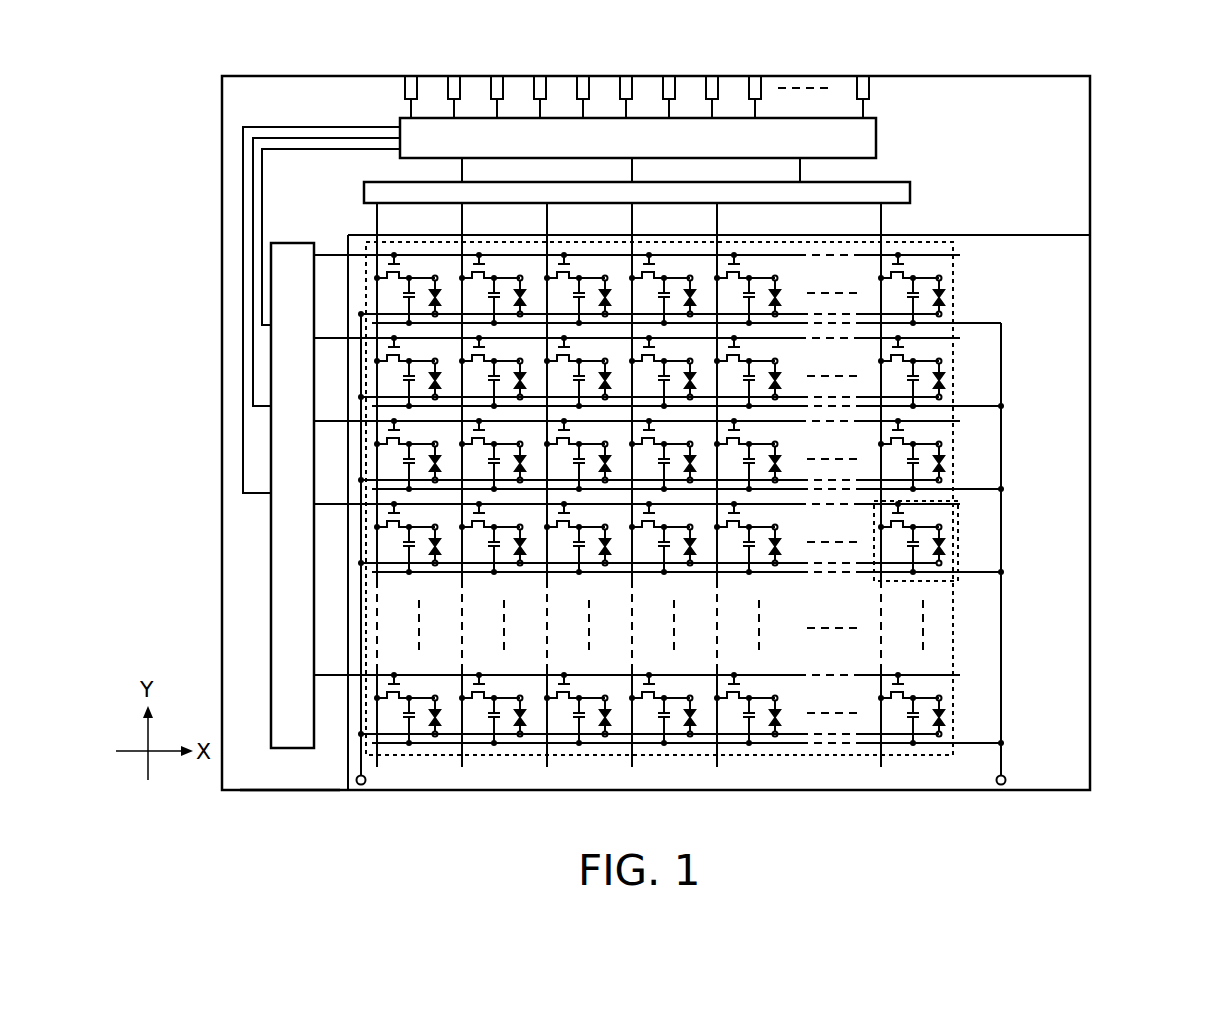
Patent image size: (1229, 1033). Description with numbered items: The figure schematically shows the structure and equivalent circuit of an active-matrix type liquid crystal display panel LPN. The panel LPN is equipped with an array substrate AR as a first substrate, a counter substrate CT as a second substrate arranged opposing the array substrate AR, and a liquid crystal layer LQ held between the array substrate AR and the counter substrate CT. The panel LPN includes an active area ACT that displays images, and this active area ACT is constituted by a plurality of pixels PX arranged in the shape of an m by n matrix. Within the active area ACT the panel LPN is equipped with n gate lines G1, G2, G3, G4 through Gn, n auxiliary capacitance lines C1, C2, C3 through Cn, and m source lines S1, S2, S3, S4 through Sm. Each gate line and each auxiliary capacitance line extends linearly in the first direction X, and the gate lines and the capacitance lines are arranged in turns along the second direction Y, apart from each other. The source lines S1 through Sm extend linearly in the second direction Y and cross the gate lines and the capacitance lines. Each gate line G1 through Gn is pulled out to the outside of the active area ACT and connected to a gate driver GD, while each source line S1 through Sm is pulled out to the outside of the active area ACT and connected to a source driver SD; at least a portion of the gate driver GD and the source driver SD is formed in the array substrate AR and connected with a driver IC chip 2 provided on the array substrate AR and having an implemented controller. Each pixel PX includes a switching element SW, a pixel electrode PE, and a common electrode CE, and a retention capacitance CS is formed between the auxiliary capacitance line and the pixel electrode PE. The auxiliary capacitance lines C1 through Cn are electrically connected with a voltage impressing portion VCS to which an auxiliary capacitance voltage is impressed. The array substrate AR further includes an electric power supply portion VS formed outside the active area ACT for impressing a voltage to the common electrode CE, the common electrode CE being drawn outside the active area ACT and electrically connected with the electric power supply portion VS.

The driver IC chip 2 is at (876, 118).
The liquid crystal display panel LPN is at (1122, 88).
The source driver SD is at (910, 190).
The gate driver GD is at (271, 610).
The counter substrate CT is at (1055, 235).
The active area ACT is at (953, 357).
The array substrate AR is at (288, 778).
The electric power supply portion VS is at (364, 785).
The voltage impressing portion VCS is at (1005, 777).
The source line S1 is at (380, 224).
The source line S2 is at (465, 224).
The source line S3 is at (550, 224).
The source line S4 is at (635, 224).
The source line Sm is at (884, 222).
The gate line G1 is at (327, 255).
The gate line G2 is at (327, 338).
The gate line G3 is at (327, 421).
The gate line G4 is at (327, 504).
The gate line Gn is at (329, 675).
The auxiliary capacitance line C1 is at (974, 322).
The auxiliary capacitance line C2 is at (974, 405).
The auxiliary capacitance line C3 is at (974, 488).
The auxiliary capacitance line Cn is at (974, 742).
The pixel PX is at (960, 582).
The switching element SW is at (870, 522).
The retention capacitance CS is at (888, 552).
The pixel electrode PE is at (943, 526).
The liquid crystal layer LQ is at (944, 546).
The common electrode CE is at (943, 563).